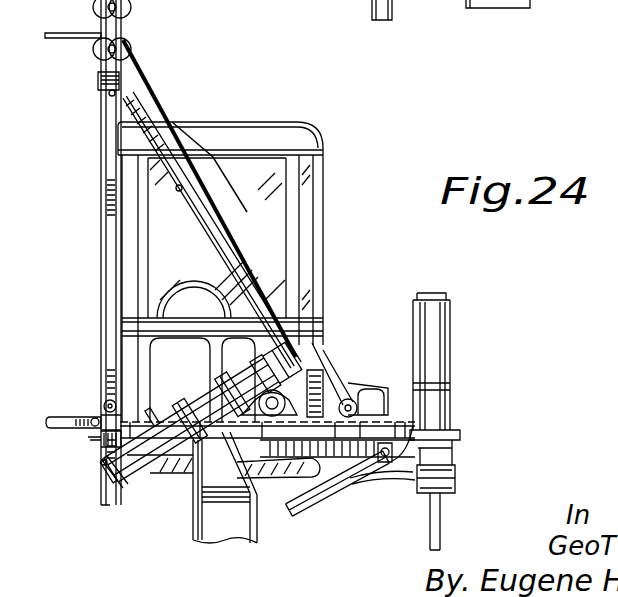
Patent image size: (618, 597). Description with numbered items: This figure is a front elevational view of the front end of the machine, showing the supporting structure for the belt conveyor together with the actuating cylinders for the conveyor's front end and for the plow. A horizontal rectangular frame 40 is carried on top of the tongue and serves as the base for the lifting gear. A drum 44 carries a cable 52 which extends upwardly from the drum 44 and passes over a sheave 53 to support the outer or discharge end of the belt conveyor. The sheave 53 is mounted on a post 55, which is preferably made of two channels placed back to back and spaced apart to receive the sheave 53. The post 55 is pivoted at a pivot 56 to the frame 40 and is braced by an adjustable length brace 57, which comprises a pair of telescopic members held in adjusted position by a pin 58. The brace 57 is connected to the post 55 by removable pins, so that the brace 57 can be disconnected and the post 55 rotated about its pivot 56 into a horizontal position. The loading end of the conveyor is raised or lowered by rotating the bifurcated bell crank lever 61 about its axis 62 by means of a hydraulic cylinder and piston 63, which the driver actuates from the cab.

The horizontal rectangular frame 40 is at (228, 425).
The drum 44 is at (270, 393).
The cable 52 is at (148, 82).
The sheave 53 is at (125, 45).
The post 55 is at (101, 205).
The pivot 56 is at (104, 404).
The adjustable length brace 57 is at (172, 120).
The pin 58 is at (179, 192).
The bifurcated bell crank lever 61 is at (323, 385).
The axis 62 is at (352, 402).
The hydraulic cylinder and piston 63 is at (147, 462).